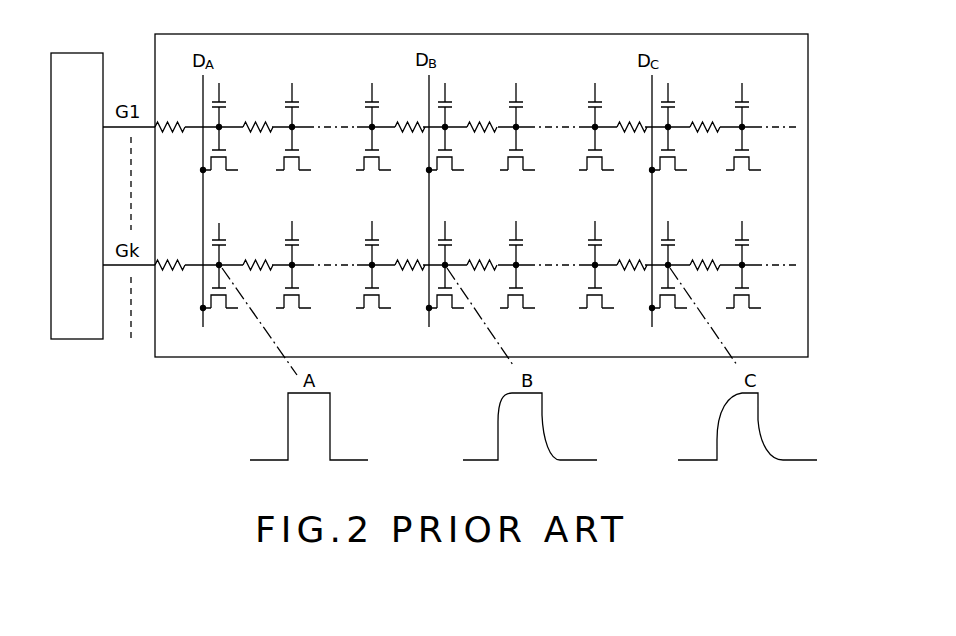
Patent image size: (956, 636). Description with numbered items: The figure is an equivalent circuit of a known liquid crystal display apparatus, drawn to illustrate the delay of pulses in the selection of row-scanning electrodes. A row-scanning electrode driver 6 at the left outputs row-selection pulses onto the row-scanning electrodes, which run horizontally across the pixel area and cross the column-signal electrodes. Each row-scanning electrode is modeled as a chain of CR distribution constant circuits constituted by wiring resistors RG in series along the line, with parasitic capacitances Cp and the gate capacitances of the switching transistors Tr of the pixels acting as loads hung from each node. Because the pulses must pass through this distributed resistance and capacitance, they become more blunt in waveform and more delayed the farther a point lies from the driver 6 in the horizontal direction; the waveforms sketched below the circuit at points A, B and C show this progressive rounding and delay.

The row-scanning electrode driver 6 is at (78, 53).
The parasitic capacitance Cp is at (218, 230).
The switching transistor Tr is at (220, 300).
The wiring resistor RG is at (258, 253).